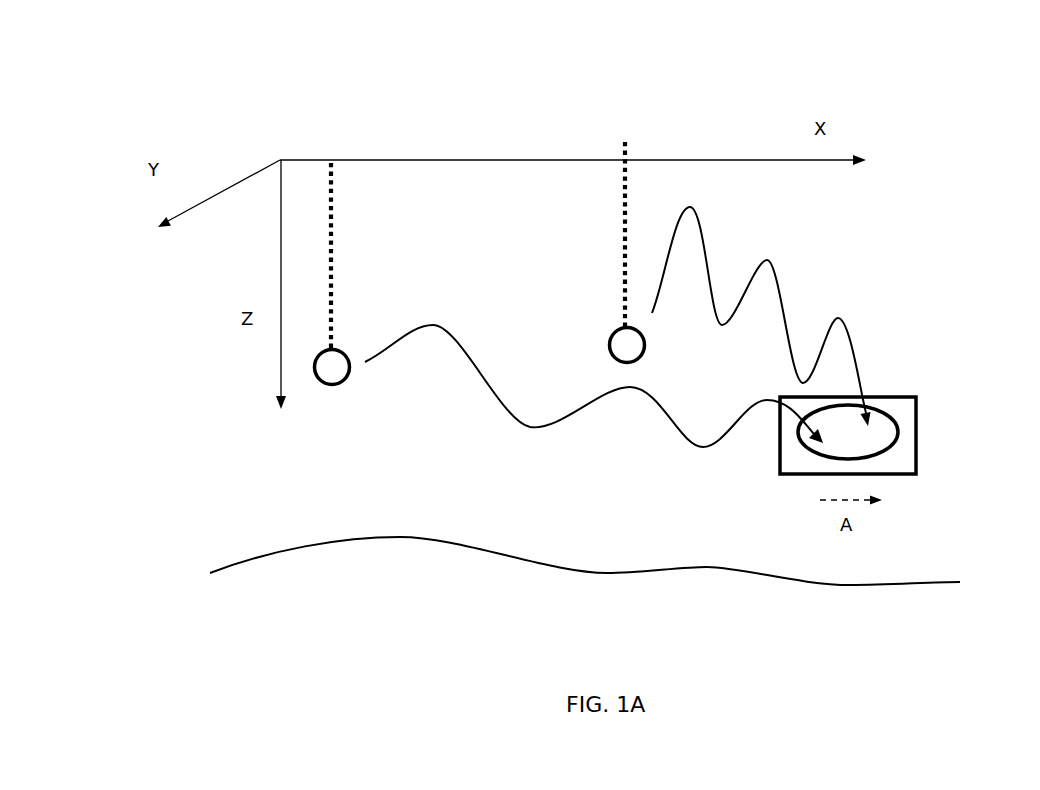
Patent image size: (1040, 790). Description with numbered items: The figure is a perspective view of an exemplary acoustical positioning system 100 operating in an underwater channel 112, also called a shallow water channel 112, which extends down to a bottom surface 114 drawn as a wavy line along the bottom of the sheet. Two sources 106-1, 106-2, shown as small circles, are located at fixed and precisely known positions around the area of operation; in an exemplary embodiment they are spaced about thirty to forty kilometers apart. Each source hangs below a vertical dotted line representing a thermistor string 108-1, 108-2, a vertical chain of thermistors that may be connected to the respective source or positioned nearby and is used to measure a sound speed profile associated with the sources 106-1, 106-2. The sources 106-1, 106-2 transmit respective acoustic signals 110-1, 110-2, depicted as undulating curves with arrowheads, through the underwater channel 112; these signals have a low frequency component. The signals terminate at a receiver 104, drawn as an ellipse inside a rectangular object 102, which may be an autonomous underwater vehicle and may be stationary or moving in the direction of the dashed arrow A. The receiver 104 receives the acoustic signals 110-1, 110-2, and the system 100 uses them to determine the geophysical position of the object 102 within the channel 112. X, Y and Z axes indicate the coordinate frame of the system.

The acoustical positioning system 100 is at (515, 110).
The object 102 is at (918, 433).
The receiver 104 is at (883, 452).
The source 106-1 is at (332, 386).
The source 106-2 is at (607, 347).
The thermistor string 108-1 is at (333, 253).
The thermistor string 108-2 is at (623, 232).
The acoustic signal 110-1 is at (520, 425).
The acoustic signal 110-2 is at (770, 268).
The underwater channel 112 is at (623, 483).
The bottom surface 114 is at (715, 566).